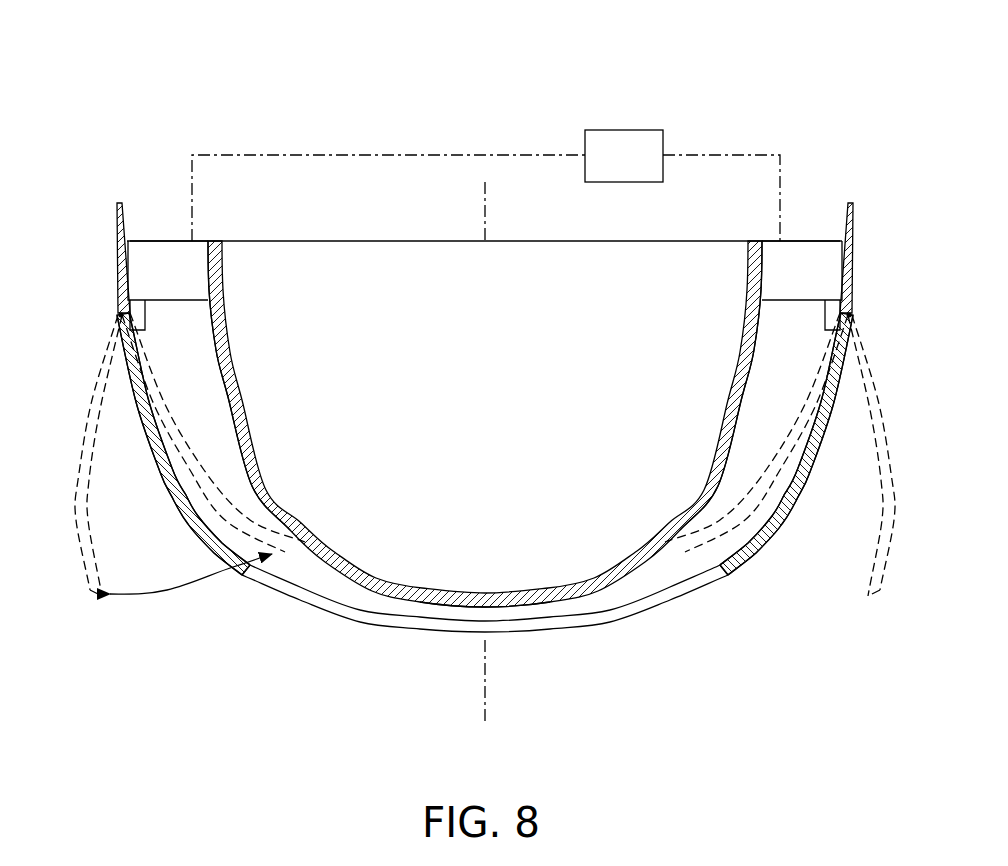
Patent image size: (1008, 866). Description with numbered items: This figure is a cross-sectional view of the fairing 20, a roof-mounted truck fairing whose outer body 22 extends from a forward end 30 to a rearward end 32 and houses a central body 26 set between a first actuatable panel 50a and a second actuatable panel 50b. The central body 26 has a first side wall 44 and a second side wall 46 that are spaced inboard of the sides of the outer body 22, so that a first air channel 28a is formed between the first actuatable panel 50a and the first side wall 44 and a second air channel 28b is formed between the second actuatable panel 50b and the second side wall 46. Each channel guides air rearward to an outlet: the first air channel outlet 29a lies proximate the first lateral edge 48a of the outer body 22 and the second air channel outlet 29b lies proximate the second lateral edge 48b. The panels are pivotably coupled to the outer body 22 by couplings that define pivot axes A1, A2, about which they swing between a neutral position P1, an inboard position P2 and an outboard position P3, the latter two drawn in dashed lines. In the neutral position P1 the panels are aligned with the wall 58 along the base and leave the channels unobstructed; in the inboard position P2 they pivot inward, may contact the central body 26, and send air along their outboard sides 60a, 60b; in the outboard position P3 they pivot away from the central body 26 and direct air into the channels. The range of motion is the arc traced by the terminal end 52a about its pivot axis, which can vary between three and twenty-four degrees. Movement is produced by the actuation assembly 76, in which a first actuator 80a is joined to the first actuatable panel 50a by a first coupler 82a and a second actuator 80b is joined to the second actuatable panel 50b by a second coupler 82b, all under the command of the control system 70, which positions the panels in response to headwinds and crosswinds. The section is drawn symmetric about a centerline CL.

The fairing 20 is at (176, 62).
The outer body 22 is at (114, 246).
The central body 26 is at (582, 596).
The first air channel 28a is at (300, 600).
The second air channel 28b is at (693, 572).
The first air channel outlet 29a is at (175, 240).
The second air channel outlet 29b is at (797, 240).
The forward end 30 is at (530, 640).
The rearward end 32 is at (355, 238).
The first side wall 44 is at (256, 458).
The second side wall 46 is at (712, 482).
The first lateral edge 48a is at (118, 203).
The second lateral edge 48b is at (851, 203).
The first actuatable panel 50a is at (216, 555).
The second actuatable panel 50b is at (758, 543).
The first terminal end 52a is at (97, 598).
The wall 58 is at (393, 634).
The outboard side 60a is at (185, 515).
The outboard side 60b is at (784, 513).
The control system 70 is at (624, 156).
The actuation assembly 76 is at (572, 118).
The first actuator 80a is at (168, 270).
The second actuator 80b is at (802, 270).
The first coupler 82a is at (137, 316).
The second coupler 82b is at (833, 316).
The first pivot axis A1 is at (120, 315).
The second pivot axis A2 is at (850, 315).
The neutral position P1 is at (139, 427).
The inboard position P2 is at (246, 497).
The outboard position P3 is at (76, 567).
The centerline CL is at (484, 202).